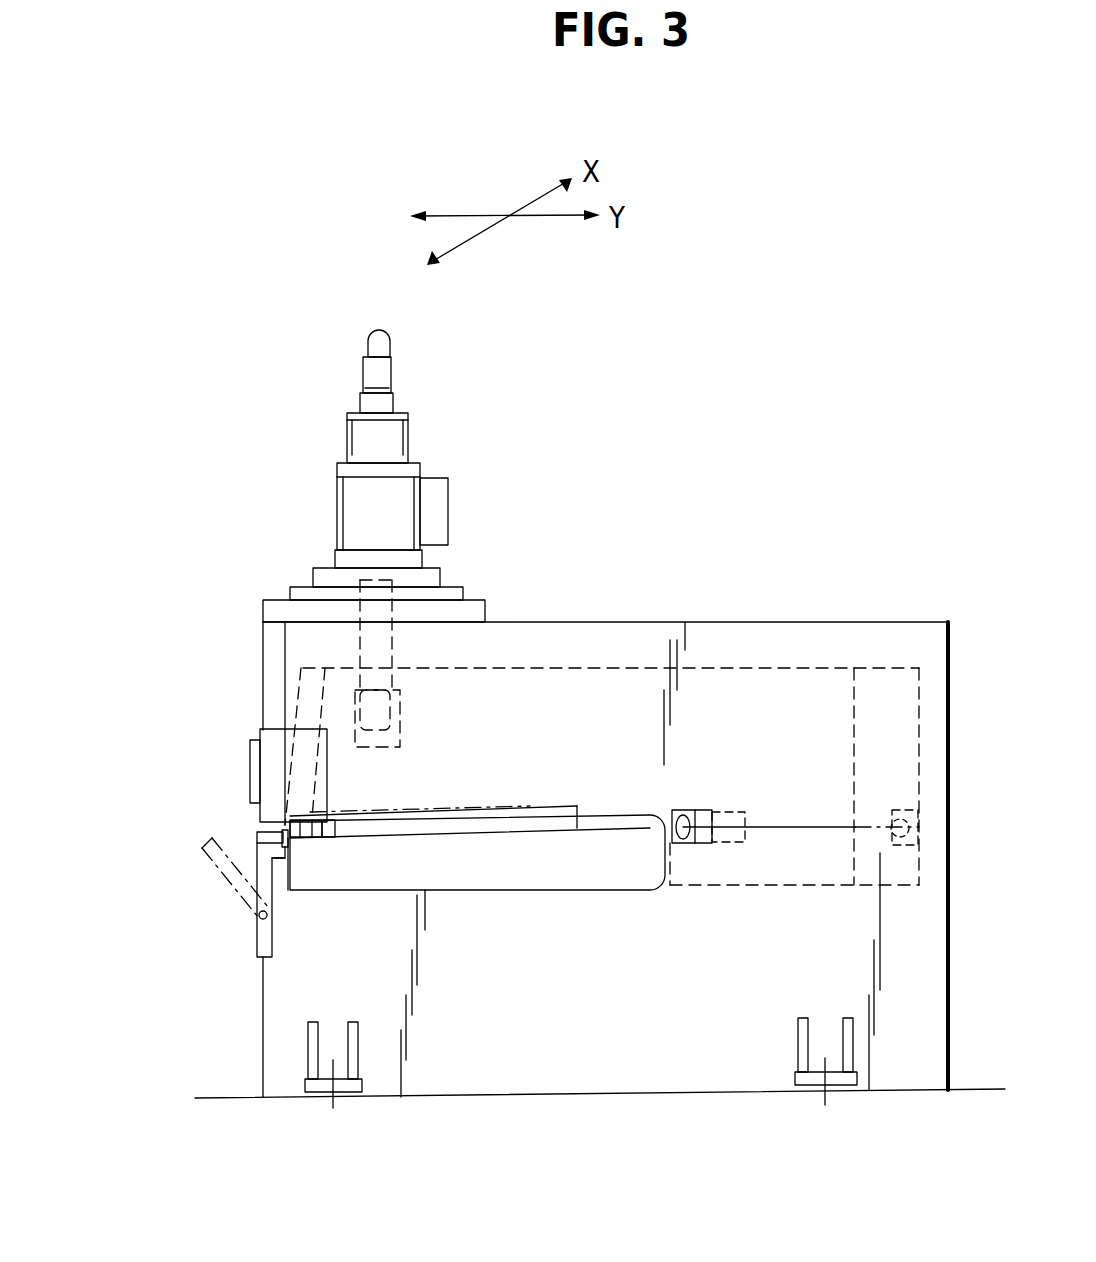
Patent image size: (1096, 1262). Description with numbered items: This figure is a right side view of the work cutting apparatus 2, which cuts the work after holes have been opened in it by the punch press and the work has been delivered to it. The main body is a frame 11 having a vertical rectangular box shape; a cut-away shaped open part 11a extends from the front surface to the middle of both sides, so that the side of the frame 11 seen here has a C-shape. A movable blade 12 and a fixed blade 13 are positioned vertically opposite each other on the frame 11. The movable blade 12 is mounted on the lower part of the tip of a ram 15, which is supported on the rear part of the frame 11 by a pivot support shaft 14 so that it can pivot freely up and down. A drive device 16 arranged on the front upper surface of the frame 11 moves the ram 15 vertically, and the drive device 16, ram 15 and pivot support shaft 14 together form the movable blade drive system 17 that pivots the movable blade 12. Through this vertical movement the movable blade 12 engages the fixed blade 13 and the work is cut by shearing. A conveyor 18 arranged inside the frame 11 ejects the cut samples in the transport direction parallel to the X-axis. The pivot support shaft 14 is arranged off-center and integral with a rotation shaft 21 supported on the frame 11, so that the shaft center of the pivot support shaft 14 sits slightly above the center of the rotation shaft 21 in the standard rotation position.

The work cutting apparatus 2 is at (764, 366).
The frame 11 is at (855, 622).
The open part 11a is at (462, 888).
The movable blade 12 is at (284, 822).
The fixed blade 13 is at (262, 840).
The pivot support shaft 14 is at (792, 827).
The ram 15 is at (618, 667).
The drive device 16 is at (408, 509).
The movable blade drive system 17 is at (733, 492).
The conveyor 18 is at (538, 805).
The rotation shaft 21 is at (697, 835).